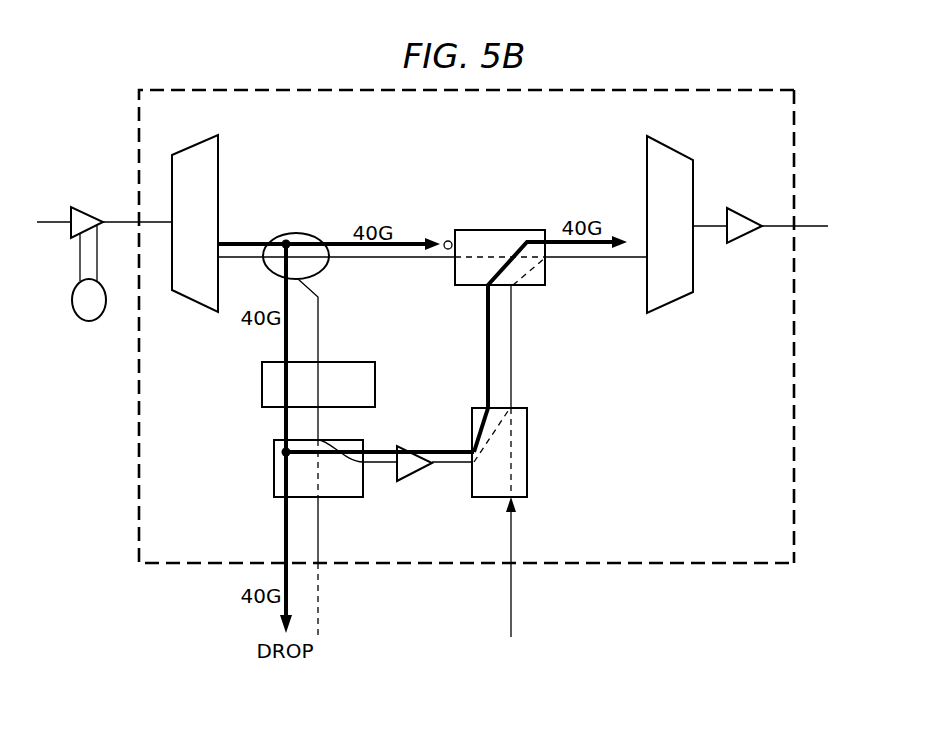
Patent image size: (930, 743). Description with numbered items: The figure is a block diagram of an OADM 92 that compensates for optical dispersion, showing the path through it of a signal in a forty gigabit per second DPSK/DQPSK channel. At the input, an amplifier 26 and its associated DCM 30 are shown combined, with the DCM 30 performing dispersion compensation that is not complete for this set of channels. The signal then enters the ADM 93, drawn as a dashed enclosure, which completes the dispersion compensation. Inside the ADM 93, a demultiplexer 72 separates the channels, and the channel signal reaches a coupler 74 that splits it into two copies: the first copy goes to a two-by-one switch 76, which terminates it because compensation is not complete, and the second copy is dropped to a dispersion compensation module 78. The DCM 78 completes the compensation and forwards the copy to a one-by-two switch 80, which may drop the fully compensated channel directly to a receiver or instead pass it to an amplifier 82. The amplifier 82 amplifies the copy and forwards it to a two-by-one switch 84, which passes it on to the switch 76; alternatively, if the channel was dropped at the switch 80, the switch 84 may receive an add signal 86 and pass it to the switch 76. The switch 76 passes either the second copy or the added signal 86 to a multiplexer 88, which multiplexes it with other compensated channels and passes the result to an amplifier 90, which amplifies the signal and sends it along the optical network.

The amplifier 26 is at (92, 212).
The DCM 30 is at (72, 300).
The demultiplexer 72 is at (195, 303).
The coupler 74 is at (295, 231).
The two-by-one switch 76 is at (527, 288).
The dispersion compensation module 78 is at (262, 384).
The one-by-two switch 80 is at (343, 498).
The amplifier 82 is at (415, 475).
The two-by-one switch 84 is at (528, 478).
The add signal 86 is at (512, 597).
The multiplexer 88 is at (672, 305).
The amplifier 90 is at (743, 237).
The OADM 92 is at (296, 67).
The ADM 93 is at (678, 90).